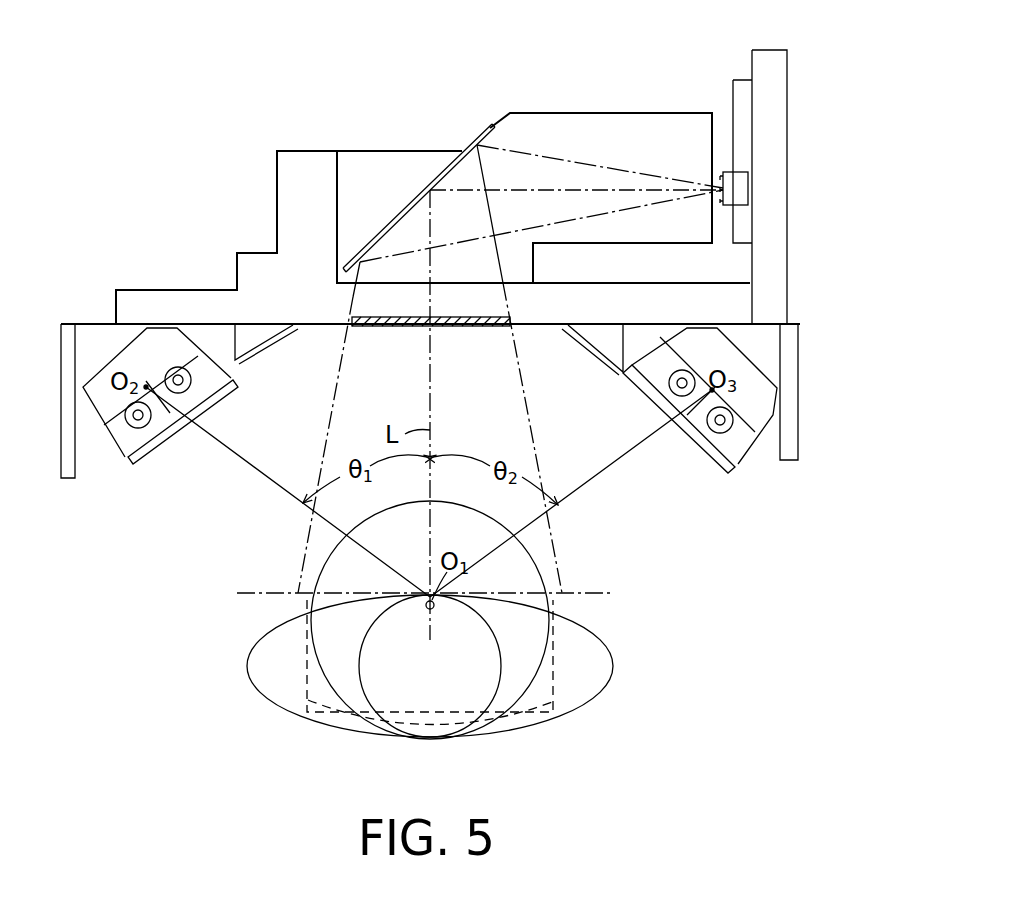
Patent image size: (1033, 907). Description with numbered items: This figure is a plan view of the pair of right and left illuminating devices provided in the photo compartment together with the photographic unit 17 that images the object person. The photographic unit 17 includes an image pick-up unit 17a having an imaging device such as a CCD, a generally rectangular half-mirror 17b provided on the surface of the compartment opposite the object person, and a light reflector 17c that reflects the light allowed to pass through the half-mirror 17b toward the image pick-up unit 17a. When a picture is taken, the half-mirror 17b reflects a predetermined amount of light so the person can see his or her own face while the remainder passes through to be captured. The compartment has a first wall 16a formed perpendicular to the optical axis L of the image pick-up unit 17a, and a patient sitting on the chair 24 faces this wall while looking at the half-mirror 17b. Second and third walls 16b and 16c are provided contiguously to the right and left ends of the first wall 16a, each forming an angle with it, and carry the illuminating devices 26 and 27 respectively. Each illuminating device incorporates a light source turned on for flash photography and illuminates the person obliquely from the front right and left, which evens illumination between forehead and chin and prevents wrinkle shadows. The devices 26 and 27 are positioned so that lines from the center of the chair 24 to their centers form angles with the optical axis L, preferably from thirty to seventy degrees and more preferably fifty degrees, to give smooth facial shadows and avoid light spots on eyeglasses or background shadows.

The first wall 16a is at (317, 327).
The second wall 16b is at (697, 449).
The third wall 16c is at (143, 459).
The photographic unit 17 is at (625, 97).
The image pick-up unit 17a is at (737, 192).
The half-mirror 17b is at (398, 327).
The light reflector 17c is at (388, 222).
The chair 24 is at (532, 580).
The illuminating device 26 is at (753, 433).
The illuminating device 27 is at (103, 427).